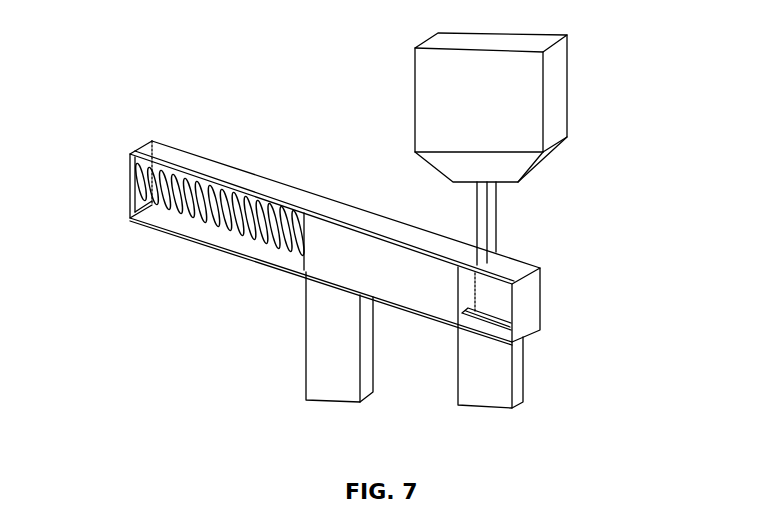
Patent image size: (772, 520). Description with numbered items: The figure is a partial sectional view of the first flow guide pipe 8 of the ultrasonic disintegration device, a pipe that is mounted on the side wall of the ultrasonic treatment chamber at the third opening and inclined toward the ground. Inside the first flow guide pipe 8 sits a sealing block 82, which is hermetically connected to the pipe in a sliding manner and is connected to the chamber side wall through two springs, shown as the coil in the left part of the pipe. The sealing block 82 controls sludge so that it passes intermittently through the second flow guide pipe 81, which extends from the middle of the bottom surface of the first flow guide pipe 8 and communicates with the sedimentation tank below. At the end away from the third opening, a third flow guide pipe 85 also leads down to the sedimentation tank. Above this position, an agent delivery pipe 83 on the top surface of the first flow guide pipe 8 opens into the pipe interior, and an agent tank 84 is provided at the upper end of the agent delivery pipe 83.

The first flow guide pipe 8 is at (157, 141).
The second flow guide pipe 81 is at (317, 363).
The sealing block 82 is at (352, 272).
The agent delivery pipe 83 is at (496, 240).
The agent tank 84 is at (536, 111).
The third flow guide pipe 85 is at (493, 385).